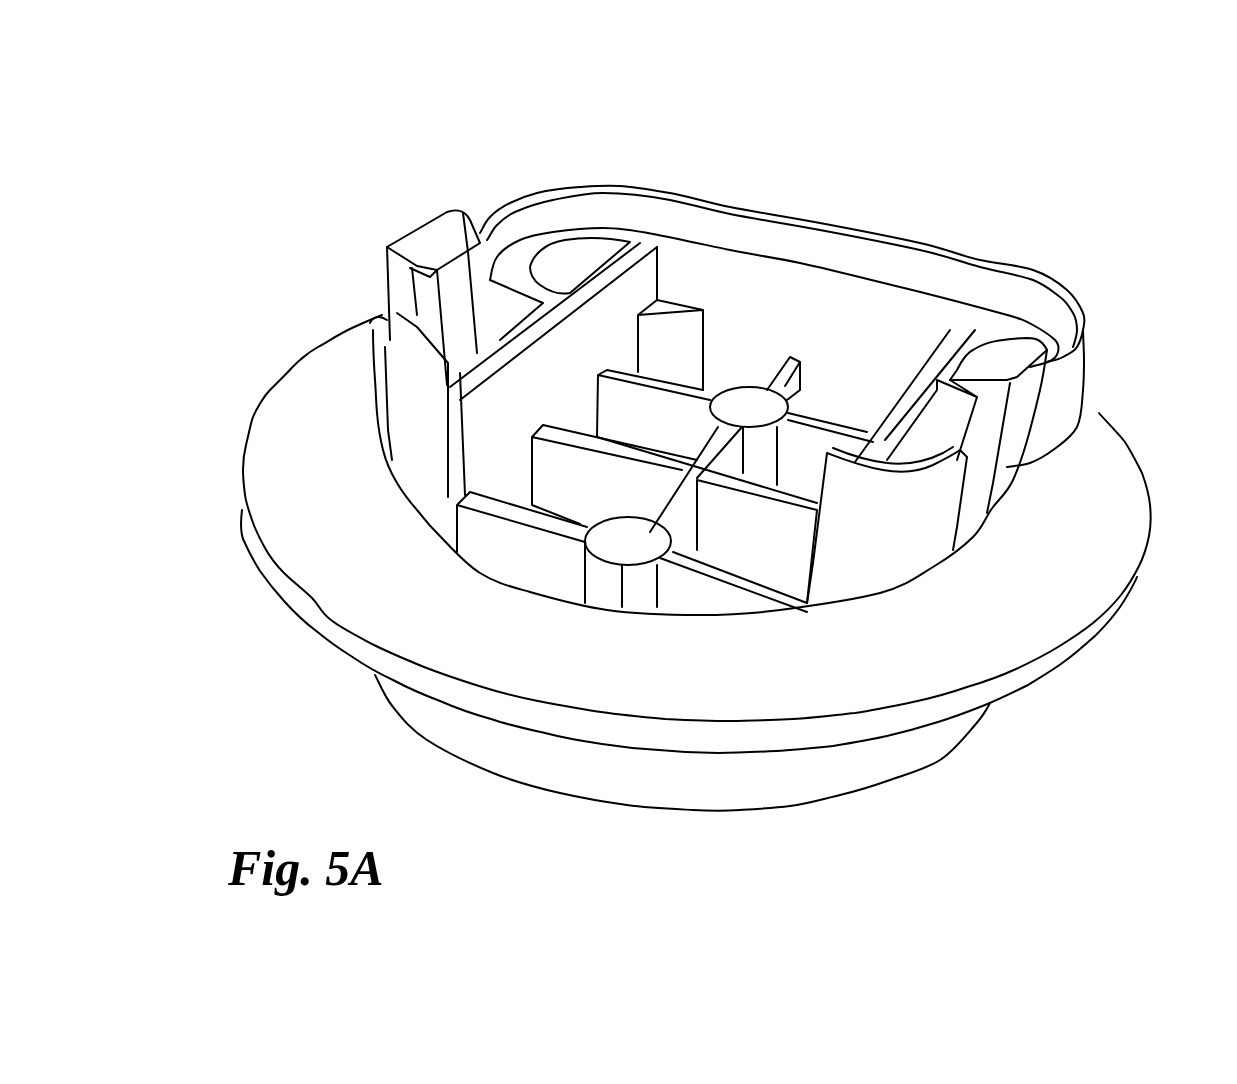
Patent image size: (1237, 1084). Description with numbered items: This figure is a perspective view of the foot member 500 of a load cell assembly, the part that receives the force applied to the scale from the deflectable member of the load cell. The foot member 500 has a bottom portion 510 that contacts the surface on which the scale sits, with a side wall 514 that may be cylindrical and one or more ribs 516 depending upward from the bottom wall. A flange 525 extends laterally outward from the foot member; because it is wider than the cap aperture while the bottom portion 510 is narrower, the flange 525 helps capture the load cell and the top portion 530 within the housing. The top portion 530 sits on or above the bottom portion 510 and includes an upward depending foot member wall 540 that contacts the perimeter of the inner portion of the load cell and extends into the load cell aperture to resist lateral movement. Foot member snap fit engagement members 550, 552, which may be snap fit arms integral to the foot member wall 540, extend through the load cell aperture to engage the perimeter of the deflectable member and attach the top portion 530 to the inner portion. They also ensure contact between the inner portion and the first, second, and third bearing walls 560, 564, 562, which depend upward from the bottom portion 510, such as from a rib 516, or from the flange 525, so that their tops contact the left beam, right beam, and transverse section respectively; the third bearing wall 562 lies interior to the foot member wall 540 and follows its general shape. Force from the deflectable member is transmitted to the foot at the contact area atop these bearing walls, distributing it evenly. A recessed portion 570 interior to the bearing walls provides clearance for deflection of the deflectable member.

The foot member 500 is at (1002, 895).
The bottom portion 510 is at (691, 563).
The side wall 514 is at (430, 717).
The ribs 516 is at (683, 380).
The flange 525 is at (313, 400).
The top portion 530 is at (1093, 415).
The foot member wall 540 is at (923, 250).
The foot member snap fit engagement member 550 is at (1000, 360).
The foot member snap fit engagement member 552 is at (430, 237).
The first foot member bearing wall 560 is at (537, 320).
The third foot member bearing wall 562 is at (760, 260).
The second foot member bearing wall 564 is at (933, 367).
The recessed portion 570 is at (790, 317).